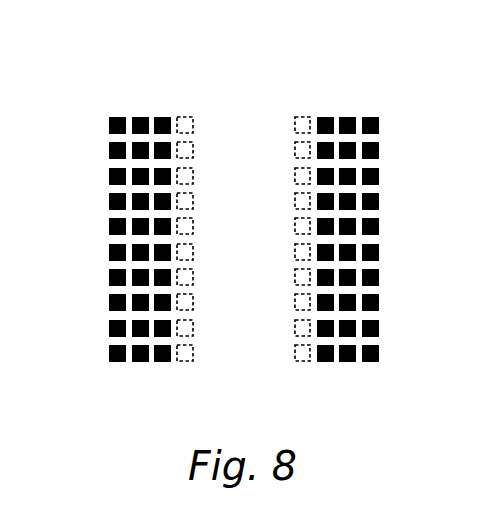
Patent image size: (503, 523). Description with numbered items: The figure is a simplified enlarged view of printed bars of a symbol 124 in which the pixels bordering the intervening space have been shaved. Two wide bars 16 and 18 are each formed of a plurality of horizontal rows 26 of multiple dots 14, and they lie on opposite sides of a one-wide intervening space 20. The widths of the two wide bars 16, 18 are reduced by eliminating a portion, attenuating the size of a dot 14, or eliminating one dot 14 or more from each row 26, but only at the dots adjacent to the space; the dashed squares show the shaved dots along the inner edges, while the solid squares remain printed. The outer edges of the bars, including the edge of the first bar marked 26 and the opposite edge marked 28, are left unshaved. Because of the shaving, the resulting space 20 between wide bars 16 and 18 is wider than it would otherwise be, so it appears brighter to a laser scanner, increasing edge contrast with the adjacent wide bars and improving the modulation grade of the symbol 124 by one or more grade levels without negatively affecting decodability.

The dot 14 is at (249, 248).
The wide bar 16 is at (100, 224).
The wide bar 18 is at (392, 239).
The intervening space 20 is at (269, 116).
The horizontal row 26 is at (102, 127).
The outer edge of second array 28 is at (388, 125).
The symbol 124 is at (249, 247).